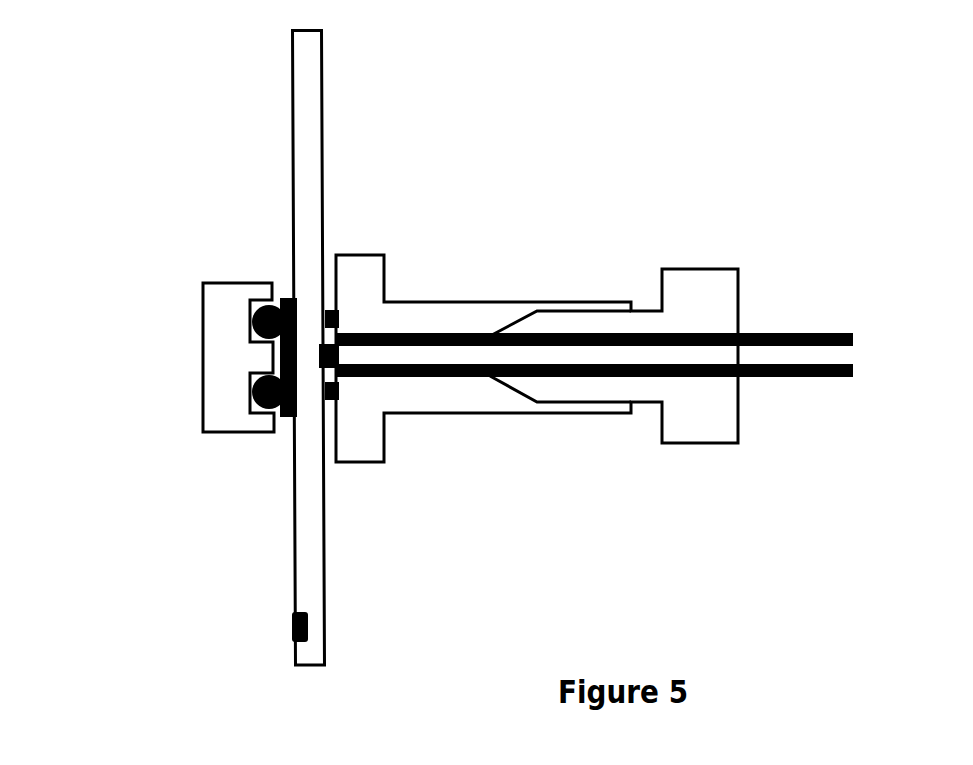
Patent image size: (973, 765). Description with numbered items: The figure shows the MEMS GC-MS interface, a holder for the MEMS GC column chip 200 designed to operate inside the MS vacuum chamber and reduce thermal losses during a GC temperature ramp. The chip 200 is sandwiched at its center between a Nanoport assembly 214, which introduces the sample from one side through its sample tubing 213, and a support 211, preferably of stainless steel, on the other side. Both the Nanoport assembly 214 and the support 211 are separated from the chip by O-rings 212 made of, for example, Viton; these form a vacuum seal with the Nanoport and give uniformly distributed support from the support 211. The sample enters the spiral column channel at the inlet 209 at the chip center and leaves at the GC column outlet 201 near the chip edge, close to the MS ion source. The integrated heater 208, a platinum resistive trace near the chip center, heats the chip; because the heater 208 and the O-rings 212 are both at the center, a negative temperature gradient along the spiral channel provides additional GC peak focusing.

The MEMS GC column chip 200 is at (333, 627).
The GC column outlet 201 is at (283, 627).
The integrated heater 208 is at (287, 425).
The inlet 209 is at (338, 357).
The support 211 is at (195, 321).
The O-rings 212 is at (278, 292).
The sample tubing 213 is at (828, 383).
The Nanoport assembly 214 is at (466, 298).